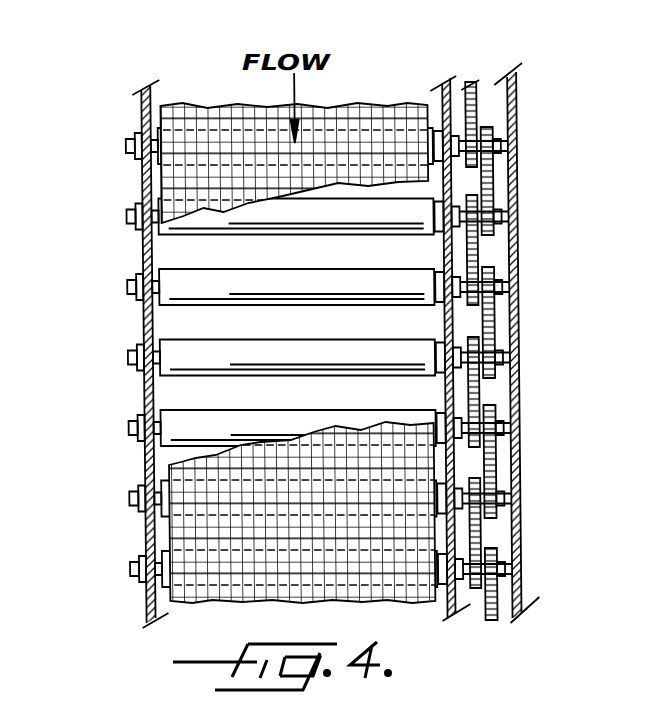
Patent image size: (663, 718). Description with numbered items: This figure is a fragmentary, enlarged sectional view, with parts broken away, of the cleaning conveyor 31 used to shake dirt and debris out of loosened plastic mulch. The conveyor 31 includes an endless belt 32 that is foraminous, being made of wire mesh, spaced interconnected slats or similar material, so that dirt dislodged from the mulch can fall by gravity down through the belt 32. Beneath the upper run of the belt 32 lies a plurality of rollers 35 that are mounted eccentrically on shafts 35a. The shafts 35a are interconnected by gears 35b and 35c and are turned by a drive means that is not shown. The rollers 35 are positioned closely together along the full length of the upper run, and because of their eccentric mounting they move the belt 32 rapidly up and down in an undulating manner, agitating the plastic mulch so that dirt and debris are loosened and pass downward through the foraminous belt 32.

The cleaning conveyor 31 is at (146, 182).
The endless belt 32 is at (186, 108).
The rollers 35 is at (323, 280).
The shafts 35a is at (495, 215).
The gears 35b is at (470, 130).
The gears 35c is at (493, 135).